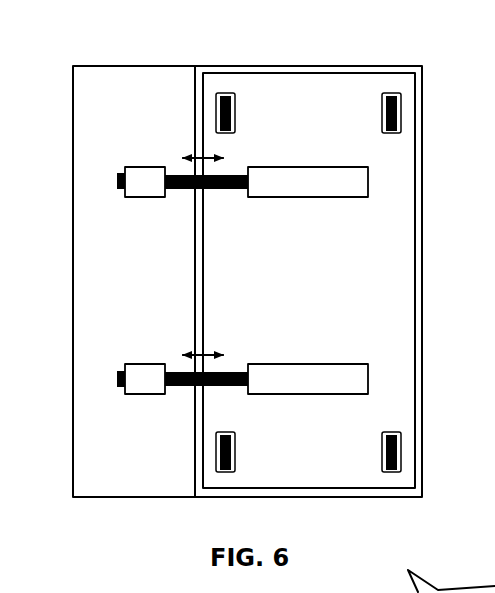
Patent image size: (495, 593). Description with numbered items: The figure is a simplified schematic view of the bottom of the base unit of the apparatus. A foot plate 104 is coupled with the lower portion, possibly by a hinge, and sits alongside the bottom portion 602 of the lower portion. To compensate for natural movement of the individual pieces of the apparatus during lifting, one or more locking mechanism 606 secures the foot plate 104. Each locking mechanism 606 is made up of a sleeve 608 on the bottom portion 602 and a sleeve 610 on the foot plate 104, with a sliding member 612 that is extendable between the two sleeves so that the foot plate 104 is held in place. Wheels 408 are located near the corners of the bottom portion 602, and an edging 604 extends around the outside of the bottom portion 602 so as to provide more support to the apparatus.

The foot plate 104 is at (247, 281).
The wheels 408 is at (224, 92).
The bottom portion 602 is at (303, 285).
The edging 604 is at (417, 253).
The locking mechanism 606 is at (262, 145).
The sleeve 608 is at (308, 182).
The sleeve 610 is at (150, 177).
The sliding member 612 is at (228, 190).